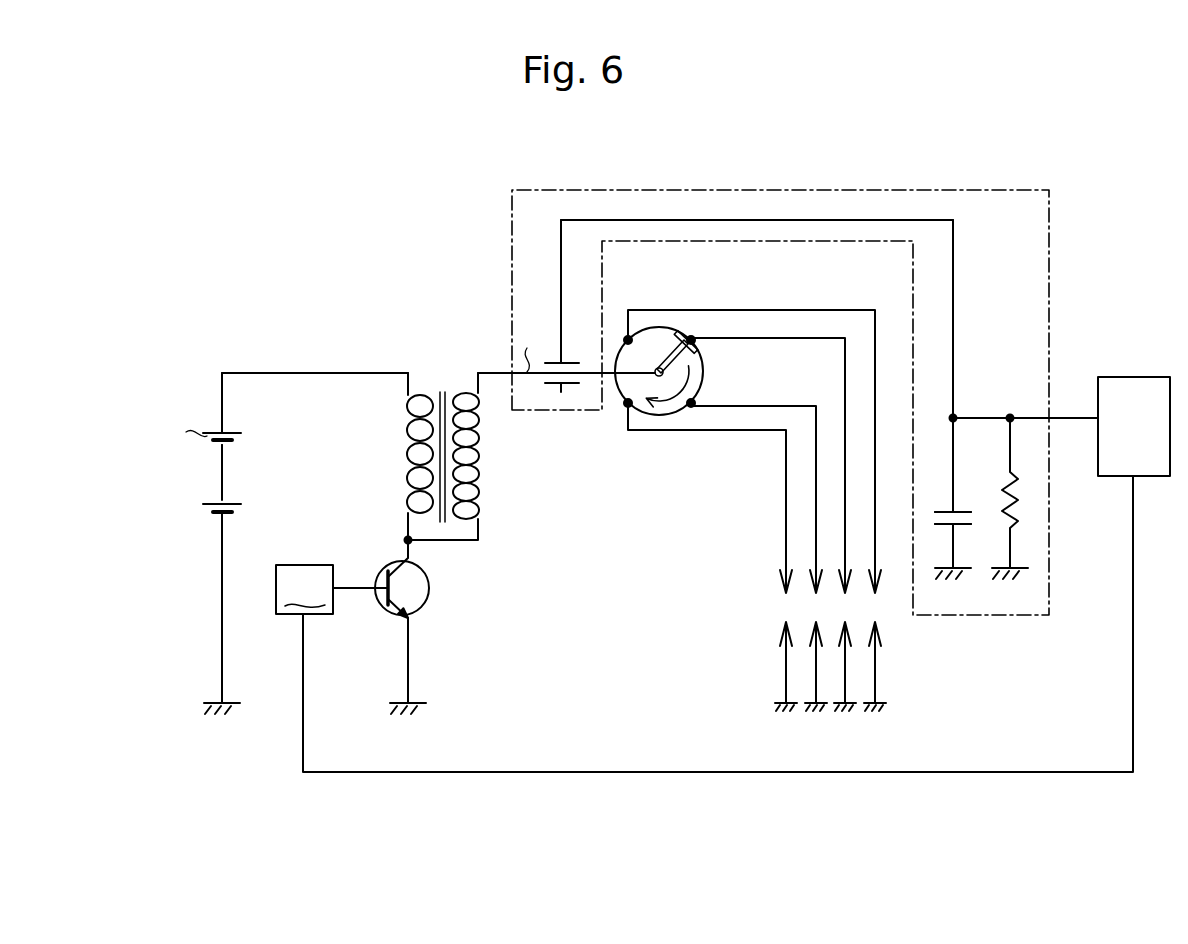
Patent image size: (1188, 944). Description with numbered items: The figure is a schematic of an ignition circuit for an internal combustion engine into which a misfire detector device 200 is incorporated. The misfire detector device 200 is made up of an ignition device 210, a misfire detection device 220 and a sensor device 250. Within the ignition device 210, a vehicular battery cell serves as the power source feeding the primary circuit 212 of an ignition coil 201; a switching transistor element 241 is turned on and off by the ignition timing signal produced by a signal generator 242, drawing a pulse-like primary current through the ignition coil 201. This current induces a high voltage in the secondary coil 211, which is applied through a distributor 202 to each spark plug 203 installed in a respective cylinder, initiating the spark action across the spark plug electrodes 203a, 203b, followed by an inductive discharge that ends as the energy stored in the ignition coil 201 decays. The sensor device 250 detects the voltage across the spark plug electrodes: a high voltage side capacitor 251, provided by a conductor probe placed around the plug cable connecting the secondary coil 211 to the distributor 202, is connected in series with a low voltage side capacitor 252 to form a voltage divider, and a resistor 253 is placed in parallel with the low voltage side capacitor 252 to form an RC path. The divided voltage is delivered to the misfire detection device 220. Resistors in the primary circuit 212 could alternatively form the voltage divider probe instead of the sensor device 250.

The misfire detector device 200 is at (494, 195).
The ignition coil 201 is at (482, 385).
The distributor 202 is at (655, 328).
The spark plug 203 is at (785, 652).
The spark plug electrode 203a is at (785, 597).
The spark plug electrode 203b is at (782, 621).
The ignition device 210 is at (211, 348).
The secondary coil 211 is at (481, 490).
The primary circuit 212 is at (310, 377).
The misfire detection device 220 is at (1123, 377).
The switching transistor element 241 is at (430, 587).
The signal generator 242 is at (704, 624).
The sensor device 250 is at (1044, 440).
The high voltage side capacitor 251 is at (561, 392).
The low voltage side capacitor 252 is at (958, 528).
The resistor 253 is at (1018, 498).